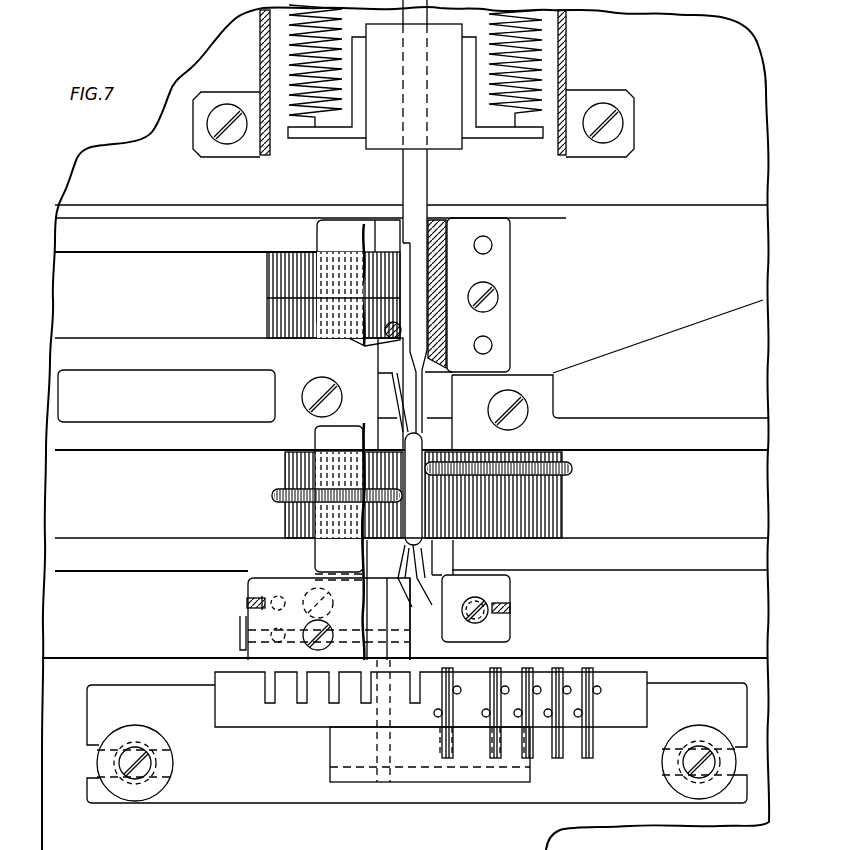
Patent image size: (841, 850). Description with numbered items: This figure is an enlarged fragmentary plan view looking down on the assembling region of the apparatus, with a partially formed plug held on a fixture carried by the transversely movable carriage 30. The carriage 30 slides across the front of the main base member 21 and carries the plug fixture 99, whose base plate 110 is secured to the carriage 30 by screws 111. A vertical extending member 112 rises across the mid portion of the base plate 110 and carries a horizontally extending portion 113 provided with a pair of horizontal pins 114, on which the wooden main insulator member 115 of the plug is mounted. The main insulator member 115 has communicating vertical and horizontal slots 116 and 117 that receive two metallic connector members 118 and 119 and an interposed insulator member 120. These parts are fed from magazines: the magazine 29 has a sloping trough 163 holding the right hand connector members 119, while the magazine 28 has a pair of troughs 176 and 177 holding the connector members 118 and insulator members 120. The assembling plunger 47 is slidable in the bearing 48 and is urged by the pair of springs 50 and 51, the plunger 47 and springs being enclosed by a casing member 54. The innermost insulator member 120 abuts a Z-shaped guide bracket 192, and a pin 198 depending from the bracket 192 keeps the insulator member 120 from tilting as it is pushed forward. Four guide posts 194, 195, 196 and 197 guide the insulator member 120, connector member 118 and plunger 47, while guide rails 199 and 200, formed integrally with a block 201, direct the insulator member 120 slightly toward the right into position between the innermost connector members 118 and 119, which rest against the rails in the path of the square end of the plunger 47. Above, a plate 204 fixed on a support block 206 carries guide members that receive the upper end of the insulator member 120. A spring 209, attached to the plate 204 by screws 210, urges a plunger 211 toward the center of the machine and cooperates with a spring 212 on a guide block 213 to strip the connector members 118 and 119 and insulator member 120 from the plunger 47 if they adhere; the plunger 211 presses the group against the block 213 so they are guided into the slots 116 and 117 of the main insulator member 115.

The main base member 21 is at (135, 213).
The magazine 28 is at (49, 314).
The magazine 29 is at (621, 386).
The carriage 30 is at (757, 717).
The plunger 47 is at (420, 200).
The bearing 48 is at (450, 137).
The spring 50 is at (540, 52).
The spring 51 is at (288, 38).
The casing member 54 is at (566, 72).
The plug fixture 99 is at (676, 680).
The base plate 110 is at (190, 797).
The screws 111 is at (134, 748).
The vertical extending member 112 is at (372, 810).
The portion 113 is at (332, 760).
The pins 114 is at (472, 740).
The main insulator member 115 is at (224, 676).
The slots 116 is at (301, 700).
The slots 117 is at (333, 705).
The connector member 118 is at (298, 474).
The connector member 119 is at (560, 518).
The insulator member 120 is at (286, 290).
The trough 163 is at (580, 452).
The trough 176 is at (116, 456).
The trough 177 is at (176, 253).
The Z-shaped guide bracket 192 is at (497, 266).
The guide post 194 is at (388, 240).
The guide post 195 is at (388, 362).
The guide post 196 is at (395, 437).
The guide post 197 is at (390, 549).
The pin 198 is at (388, 336).
The guide rail 199 is at (395, 400).
The guide rail 200 is at (425, 408).
The block 201 is at (413, 447).
The plate 204 is at (250, 630).
The support block 206 is at (250, 592).
The spring 209 is at (250, 582).
The screws 210 is at (262, 598).
The plunger 211 is at (246, 650).
The spring 212 is at (512, 580).
The guide block 213 is at (497, 634).